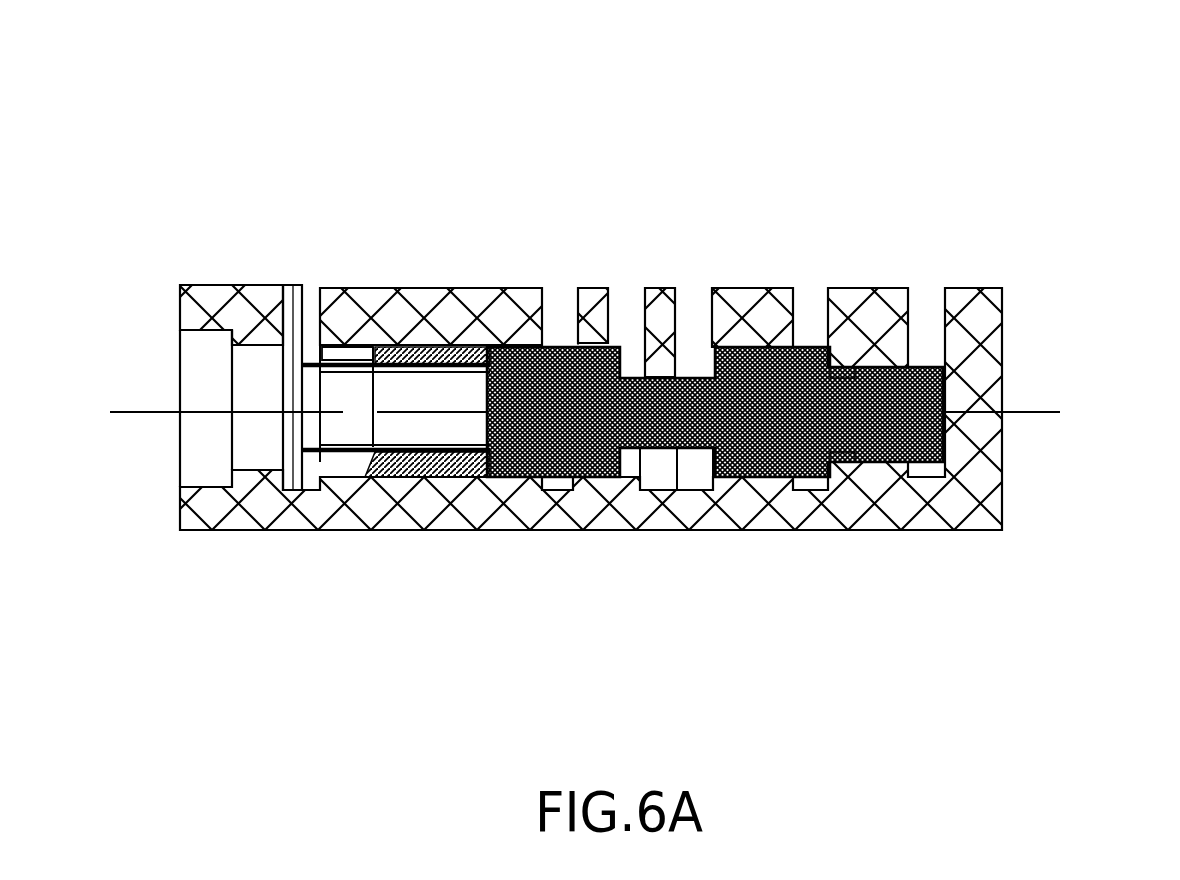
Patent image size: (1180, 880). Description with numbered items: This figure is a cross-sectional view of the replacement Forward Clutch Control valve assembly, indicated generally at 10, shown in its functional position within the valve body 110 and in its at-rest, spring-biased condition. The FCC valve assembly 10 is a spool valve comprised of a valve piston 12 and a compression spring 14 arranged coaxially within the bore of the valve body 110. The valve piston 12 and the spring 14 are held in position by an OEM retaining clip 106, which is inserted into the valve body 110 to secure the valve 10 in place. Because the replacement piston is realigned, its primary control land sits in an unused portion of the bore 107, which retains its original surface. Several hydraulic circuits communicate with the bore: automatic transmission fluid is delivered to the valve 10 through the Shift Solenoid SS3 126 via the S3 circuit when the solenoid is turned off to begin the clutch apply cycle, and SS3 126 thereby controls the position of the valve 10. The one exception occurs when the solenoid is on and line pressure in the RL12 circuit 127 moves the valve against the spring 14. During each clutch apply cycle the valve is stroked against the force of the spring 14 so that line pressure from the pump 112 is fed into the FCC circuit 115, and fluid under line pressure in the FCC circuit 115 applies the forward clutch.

The FCC valve assembly 10 is at (485, 152).
The valve piston 12 is at (586, 477).
The compression spring 14 is at (352, 462).
The OEM retaining clip 106 is at (296, 287).
The unused portion of the bore 107 is at (396, 328).
The valve body 110 is at (993, 318).
The line pressure from the pump 112 is at (563, 288).
The FCC circuit 115 is at (620, 306).
The Shift Solenoid (SS3) 126 is at (927, 288).
The RL12 circuit 127 is at (815, 288).